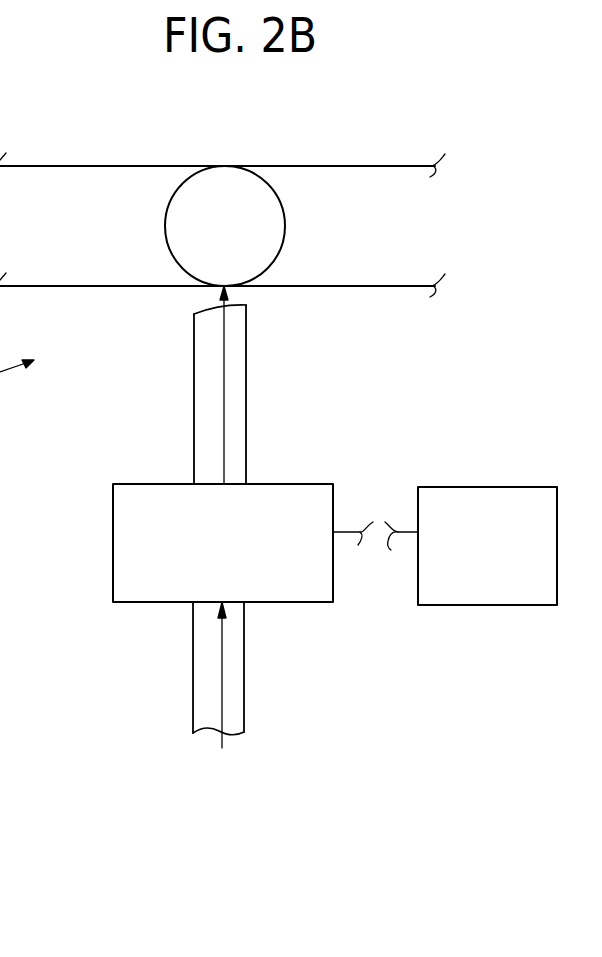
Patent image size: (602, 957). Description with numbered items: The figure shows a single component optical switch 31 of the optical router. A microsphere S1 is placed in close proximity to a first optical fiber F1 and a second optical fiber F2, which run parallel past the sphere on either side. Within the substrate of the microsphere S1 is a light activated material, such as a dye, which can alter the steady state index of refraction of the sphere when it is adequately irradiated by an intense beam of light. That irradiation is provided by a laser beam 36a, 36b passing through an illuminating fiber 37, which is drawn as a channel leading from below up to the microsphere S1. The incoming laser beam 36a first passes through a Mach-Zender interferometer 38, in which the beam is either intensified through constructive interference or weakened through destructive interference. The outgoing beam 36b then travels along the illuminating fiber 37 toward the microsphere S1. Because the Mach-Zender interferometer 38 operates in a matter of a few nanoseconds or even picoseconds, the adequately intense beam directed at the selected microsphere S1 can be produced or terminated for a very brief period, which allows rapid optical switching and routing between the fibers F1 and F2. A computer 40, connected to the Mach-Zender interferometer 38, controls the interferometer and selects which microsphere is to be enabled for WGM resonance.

The optical switch 31 is at (438, 377).
The first optical fiber F1 is at (393, 166).
The second optical fiber F2 is at (357, 286).
The microsphere S1 is at (213, 232).
The laser beam 36a is at (222, 673).
The laser beam 36b is at (225, 395).
The illuminating fiber 37 is at (246, 457).
The Mach-Zender interferometer 38 is at (320, 484).
The computer 40 is at (474, 552).